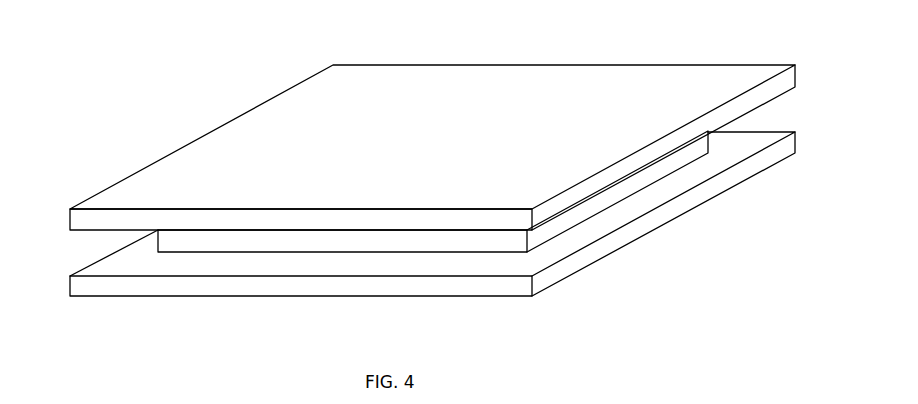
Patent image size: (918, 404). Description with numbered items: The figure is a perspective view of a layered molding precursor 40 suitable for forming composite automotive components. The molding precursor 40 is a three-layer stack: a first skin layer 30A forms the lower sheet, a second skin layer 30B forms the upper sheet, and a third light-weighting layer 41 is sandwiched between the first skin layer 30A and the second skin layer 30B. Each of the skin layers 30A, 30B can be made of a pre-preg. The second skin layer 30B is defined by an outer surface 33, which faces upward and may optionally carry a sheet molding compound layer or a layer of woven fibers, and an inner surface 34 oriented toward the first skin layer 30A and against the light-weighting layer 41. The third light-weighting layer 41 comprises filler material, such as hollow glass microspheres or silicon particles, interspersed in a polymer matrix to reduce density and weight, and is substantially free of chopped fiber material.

The layered molding precursor 40 is at (166, 68).
The first skin layer 30A is at (290, 285).
The second skin layer 30B is at (788, 80).
The outer surface 33 is at (438, 150).
The inner surface 34 is at (507, 232).
The third light-weighting layer 41 is at (188, 243).